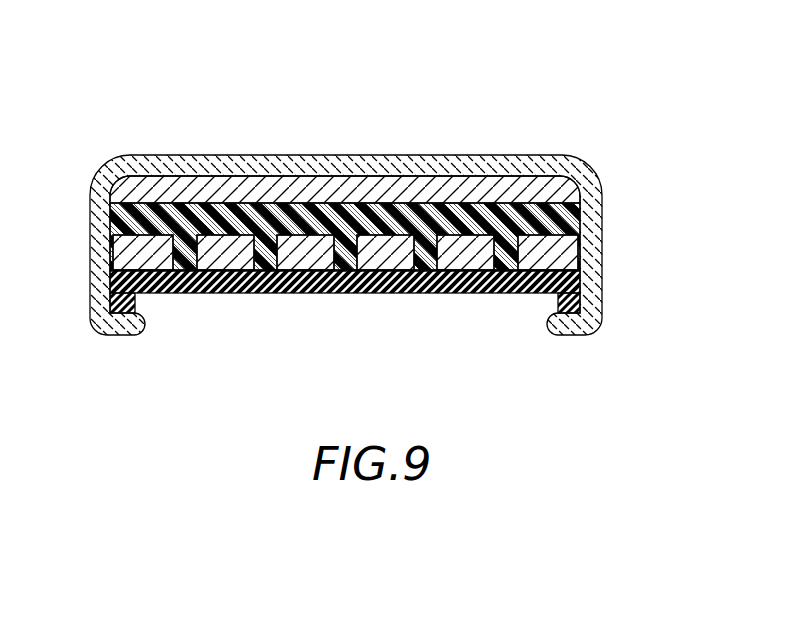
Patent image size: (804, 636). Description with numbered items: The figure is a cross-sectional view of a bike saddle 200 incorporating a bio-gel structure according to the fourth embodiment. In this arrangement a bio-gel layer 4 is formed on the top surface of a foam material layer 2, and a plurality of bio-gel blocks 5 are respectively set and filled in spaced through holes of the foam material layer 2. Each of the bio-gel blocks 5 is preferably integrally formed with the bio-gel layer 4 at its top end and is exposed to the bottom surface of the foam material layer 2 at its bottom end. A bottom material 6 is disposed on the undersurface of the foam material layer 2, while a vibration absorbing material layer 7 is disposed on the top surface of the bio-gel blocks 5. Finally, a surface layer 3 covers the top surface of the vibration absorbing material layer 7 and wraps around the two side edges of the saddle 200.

The bike saddle 200 is at (384, 189).
The surface layer 3 is at (402, 167).
The vibration absorbing material layer 7 is at (556, 183).
The bio-gel layer 4 is at (578, 210).
The foam material layer 2 is at (570, 255).
The bio-gel blocks 5 is at (424, 285).
The bottom material 6 is at (272, 286).